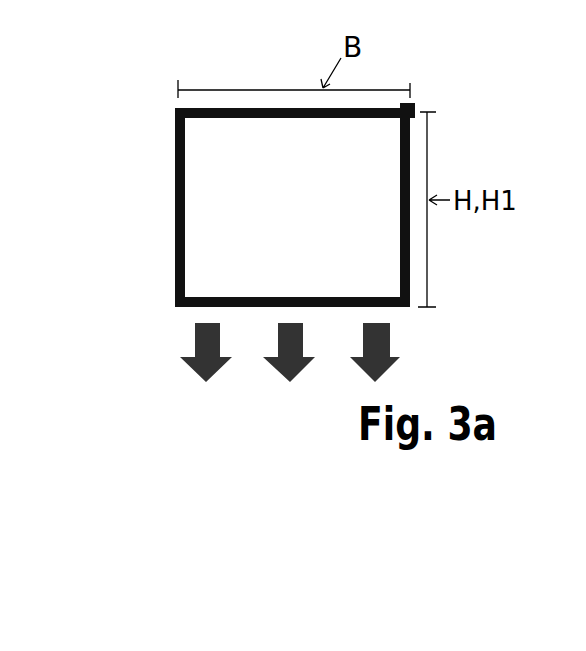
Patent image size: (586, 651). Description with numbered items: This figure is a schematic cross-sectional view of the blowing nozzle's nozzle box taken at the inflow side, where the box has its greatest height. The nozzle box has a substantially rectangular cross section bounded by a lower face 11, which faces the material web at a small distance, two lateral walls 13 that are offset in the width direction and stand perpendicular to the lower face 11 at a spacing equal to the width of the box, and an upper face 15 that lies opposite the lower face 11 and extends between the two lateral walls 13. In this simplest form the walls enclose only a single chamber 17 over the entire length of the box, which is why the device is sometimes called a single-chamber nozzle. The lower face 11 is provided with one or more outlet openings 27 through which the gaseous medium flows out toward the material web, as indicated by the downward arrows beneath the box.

The lower face 11 is at (247, 312).
The lateral walls 13 is at (175, 158).
The upper face 15 is at (396, 111).
The chamber 17 is at (303, 236).
The outlet openings 27 is at (352, 314).